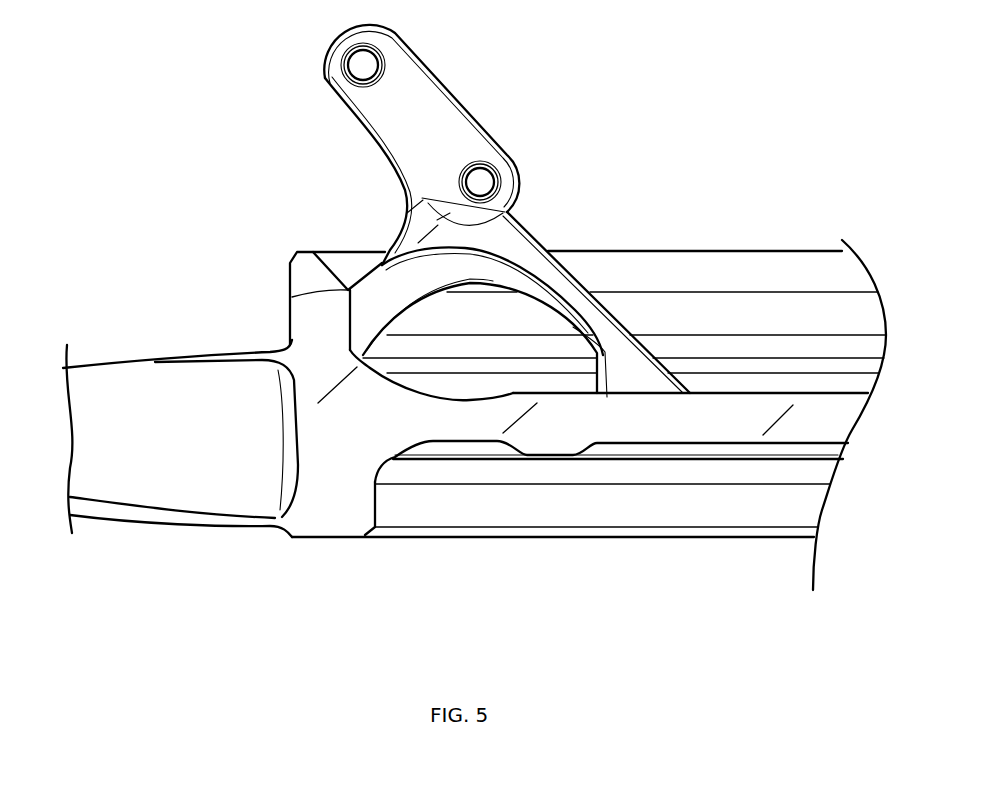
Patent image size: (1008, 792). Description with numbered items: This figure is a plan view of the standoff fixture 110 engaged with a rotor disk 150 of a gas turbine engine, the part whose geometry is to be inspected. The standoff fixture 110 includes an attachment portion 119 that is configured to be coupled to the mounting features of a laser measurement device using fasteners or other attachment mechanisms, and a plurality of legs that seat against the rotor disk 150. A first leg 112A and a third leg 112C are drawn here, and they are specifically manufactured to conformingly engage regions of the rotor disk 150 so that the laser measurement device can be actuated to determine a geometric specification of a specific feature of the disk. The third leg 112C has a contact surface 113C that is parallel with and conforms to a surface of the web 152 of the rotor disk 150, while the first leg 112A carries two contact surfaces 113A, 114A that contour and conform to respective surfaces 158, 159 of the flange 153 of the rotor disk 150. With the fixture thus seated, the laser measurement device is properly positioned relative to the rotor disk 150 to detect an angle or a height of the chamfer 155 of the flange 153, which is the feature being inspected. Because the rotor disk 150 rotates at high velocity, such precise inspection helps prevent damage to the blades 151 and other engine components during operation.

The standoff fixture 110 is at (553, 143).
The attachment portion 119 is at (415, 125).
The first leg 112A is at (382, 290).
The third leg 112C is at (570, 290).
The contact surface 113A is at (292, 297).
The contact surface 113C is at (632, 395).
The contact surface 114A is at (290, 345).
The rotor disk 150 is at (110, 215).
The blades 151 is at (187, 385).
The web 152 is at (800, 432).
The flange 153 is at (360, 505).
The chamfer 155 is at (342, 263).
The surface of the flange 158 is at (697, 305).
The surface of the flange 159 is at (772, 345).